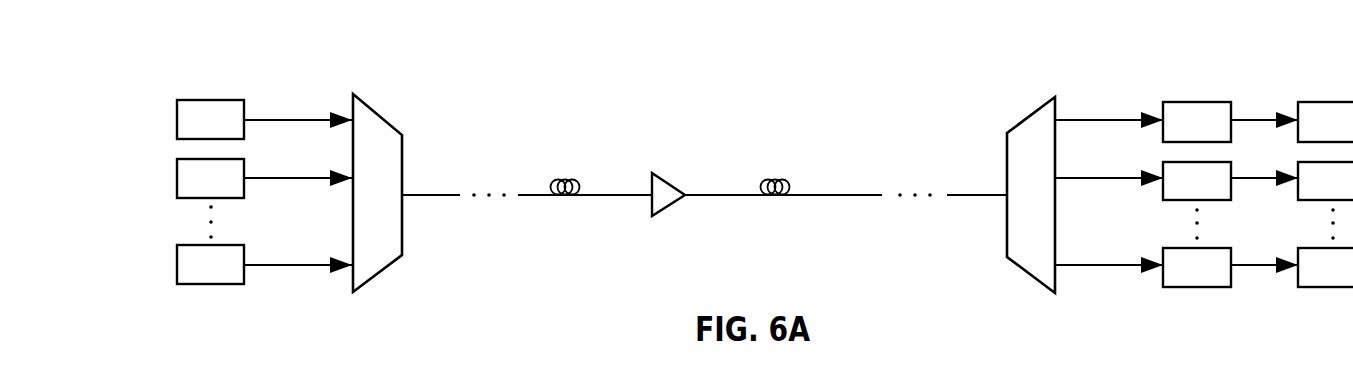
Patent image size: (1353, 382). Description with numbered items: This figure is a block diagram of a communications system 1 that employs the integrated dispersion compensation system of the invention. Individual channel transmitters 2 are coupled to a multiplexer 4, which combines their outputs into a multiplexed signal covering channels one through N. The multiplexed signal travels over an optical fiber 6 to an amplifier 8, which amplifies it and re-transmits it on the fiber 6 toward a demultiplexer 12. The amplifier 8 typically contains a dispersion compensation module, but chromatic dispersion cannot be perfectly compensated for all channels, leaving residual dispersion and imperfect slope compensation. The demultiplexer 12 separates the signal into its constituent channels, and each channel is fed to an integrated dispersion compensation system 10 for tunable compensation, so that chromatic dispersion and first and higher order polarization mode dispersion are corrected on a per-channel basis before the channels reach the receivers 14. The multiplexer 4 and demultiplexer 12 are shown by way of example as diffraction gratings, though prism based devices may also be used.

The optical communication system 1 is at (976, 46).
The individual channel transmitters 2 is at (219, 100).
The multiplexer 4 is at (382, 117).
The optical fiber 6 is at (603, 197).
The amplifier 8 is at (669, 184).
The integrated dispersion compensation system 10 is at (1203, 101).
The demultiplexer 12 is at (1031, 115).
The receivers 14 is at (1328, 289).